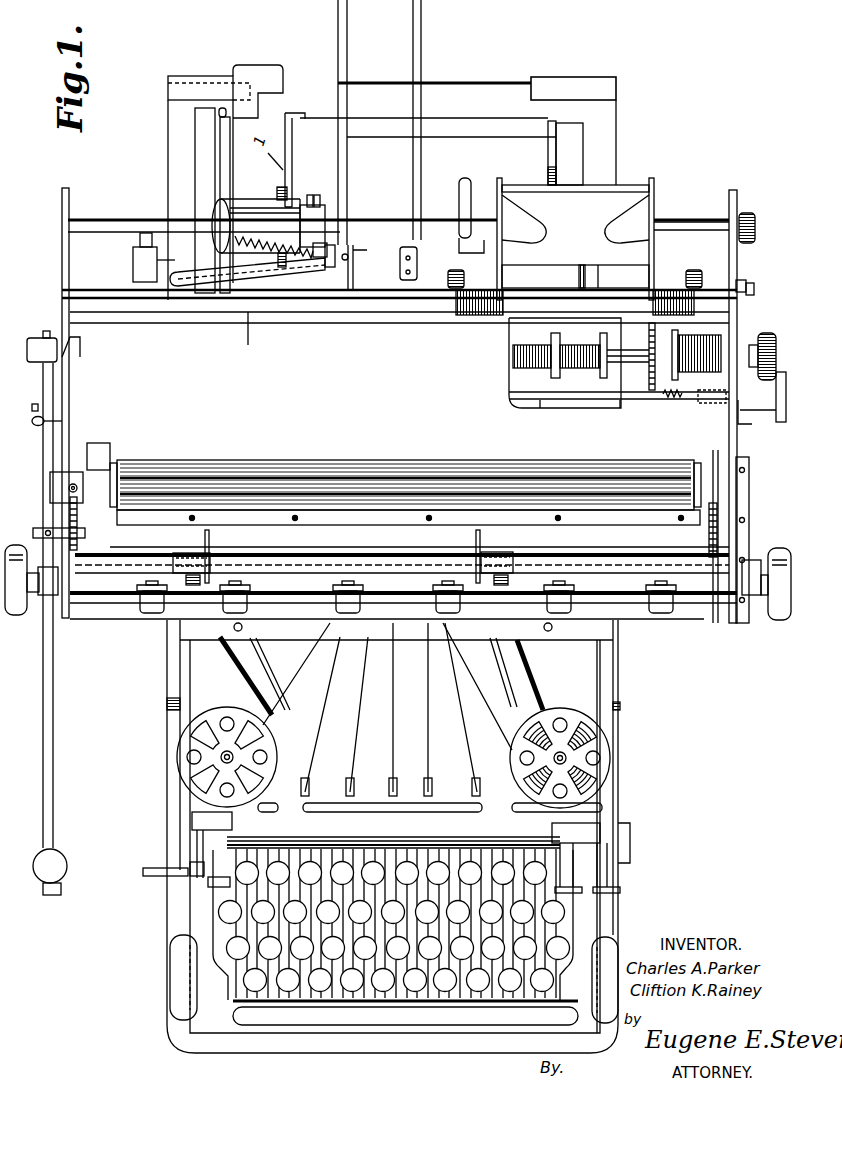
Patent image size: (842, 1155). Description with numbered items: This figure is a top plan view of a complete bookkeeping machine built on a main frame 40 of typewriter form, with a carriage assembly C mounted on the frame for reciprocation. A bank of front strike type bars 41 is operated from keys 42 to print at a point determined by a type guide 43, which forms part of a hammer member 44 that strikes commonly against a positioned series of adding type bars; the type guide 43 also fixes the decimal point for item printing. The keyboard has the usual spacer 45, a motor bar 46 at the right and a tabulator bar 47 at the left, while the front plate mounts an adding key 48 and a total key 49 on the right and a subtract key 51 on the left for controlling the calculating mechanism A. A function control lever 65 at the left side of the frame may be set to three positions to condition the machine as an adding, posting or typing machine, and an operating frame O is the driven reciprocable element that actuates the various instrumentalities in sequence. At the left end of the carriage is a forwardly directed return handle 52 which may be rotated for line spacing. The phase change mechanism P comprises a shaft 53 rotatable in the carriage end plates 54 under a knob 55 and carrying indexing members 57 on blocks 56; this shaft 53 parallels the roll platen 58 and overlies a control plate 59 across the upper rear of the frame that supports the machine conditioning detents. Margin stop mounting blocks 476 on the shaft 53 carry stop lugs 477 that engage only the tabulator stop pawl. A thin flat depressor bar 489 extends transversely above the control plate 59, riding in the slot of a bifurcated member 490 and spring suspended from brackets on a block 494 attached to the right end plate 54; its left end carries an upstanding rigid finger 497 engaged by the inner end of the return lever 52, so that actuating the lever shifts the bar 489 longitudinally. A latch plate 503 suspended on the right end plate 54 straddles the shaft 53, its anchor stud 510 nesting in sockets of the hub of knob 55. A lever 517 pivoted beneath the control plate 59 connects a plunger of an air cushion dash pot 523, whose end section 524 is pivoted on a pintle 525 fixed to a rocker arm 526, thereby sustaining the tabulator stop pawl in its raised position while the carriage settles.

The main frame 40 is at (624, 804).
The front strike type bars 41 is at (352, 728).
The keys 42 is at (438, 990).
The type guide 43 is at (397, 643).
The hammer member 44 is at (355, 640).
The spacer 45 is at (497, 1016).
The motor bar 46 is at (607, 952).
The tabulator bar 47 is at (172, 981).
The adding key 48 is at (582, 894).
The total key 49 is at (618, 878).
The subtract key 51 is at (68, 378).
The return handle 52 is at (45, 727).
The phase change control shaft 53 is at (514, 350).
The carriage end plates 54 is at (720, 416).
The knob 55 is at (767, 331).
The blocks 56 is at (586, 346).
The indexing members 57 is at (590, 368).
The roll platen 58 is at (628, 618).
The control plate 59 is at (510, 385).
The function control lever 65 is at (148, 873).
The mounting blocks 476 is at (662, 289).
The stop lugs 477 is at (651, 392).
The depressor bar 489 is at (584, 400).
The bifurcated member 490 is at (763, 418).
The block 494 is at (686, 398).
The rigid finger 497 is at (32, 402).
The latch plate 503 is at (741, 288).
The anchor stud 510 is at (756, 291).
The lever 517 is at (189, 258).
The air cushion dash pot 523 is at (258, 202).
The end section 524 is at (310, 194).
The pintle 525 is at (318, 194).
The rocker arm 526 is at (358, 246).
The calculating mechanism A is at (421, 54).
The carriage assembly C is at (399, 358).
The operating frame O is at (289, 110).
The phase change mechanism P is at (765, 398).